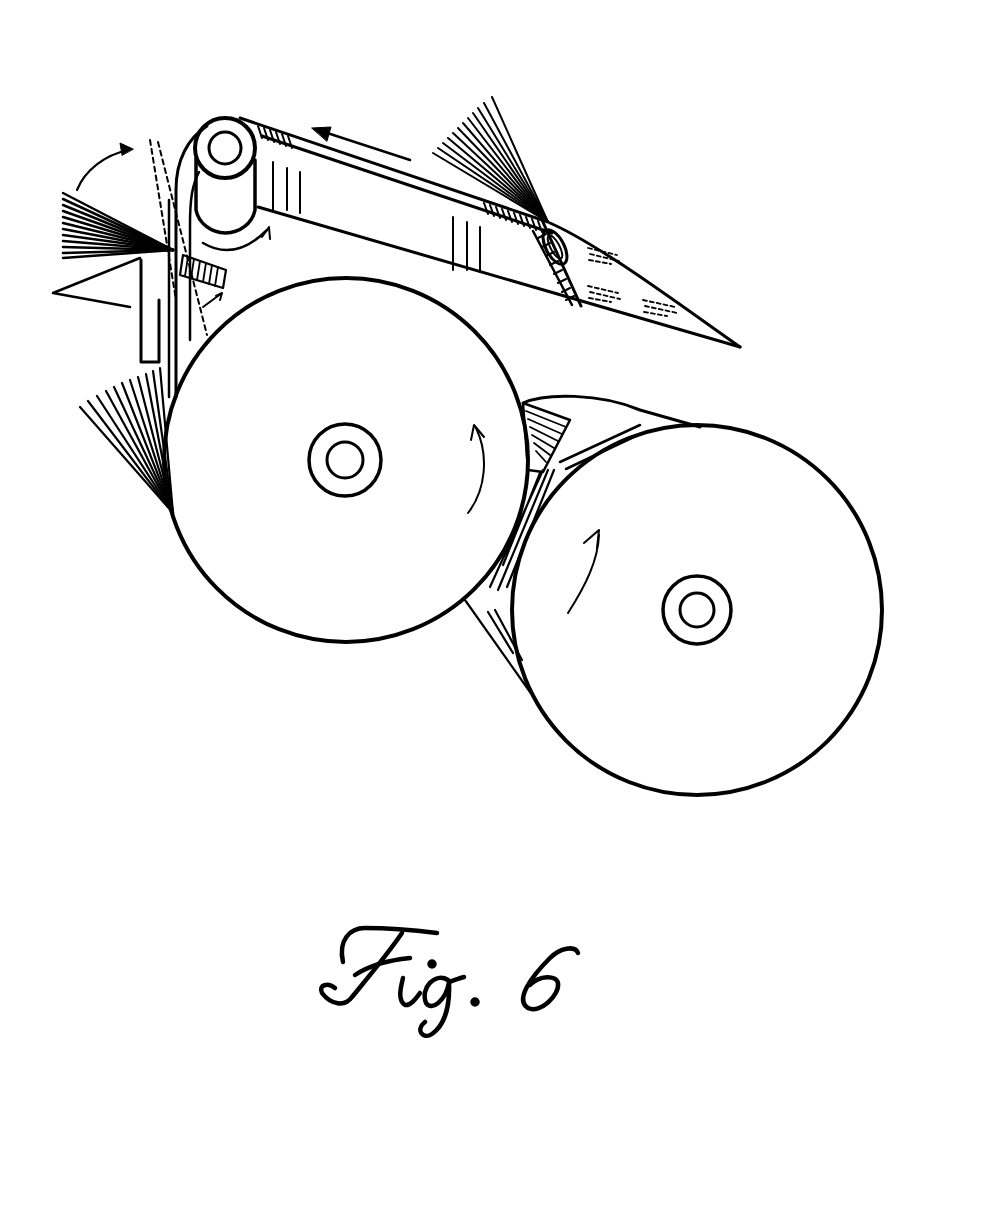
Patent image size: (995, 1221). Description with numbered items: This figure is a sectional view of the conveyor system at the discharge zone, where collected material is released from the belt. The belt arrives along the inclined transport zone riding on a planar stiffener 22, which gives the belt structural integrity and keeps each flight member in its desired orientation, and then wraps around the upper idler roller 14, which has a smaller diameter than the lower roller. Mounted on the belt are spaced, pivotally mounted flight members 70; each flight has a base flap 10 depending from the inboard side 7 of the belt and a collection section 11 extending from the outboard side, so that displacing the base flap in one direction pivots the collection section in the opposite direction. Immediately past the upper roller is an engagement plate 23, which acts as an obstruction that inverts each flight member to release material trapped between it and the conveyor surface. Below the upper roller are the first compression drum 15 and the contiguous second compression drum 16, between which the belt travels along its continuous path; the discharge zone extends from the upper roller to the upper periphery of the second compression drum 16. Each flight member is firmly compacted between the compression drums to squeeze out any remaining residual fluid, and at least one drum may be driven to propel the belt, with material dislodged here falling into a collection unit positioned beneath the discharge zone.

The inboard side 7 is at (657, 283).
The base flap 10 is at (550, 223).
The collection section 11 is at (510, 113).
The upper idler roller 14 is at (222, 148).
The first compression drum 15 is at (258, 572).
The second compression drum 16 is at (578, 680).
The planar stiffener 22 is at (360, 211).
The engagement plate 23 is at (157, 302).
The flight members 70 is at (55, 206).